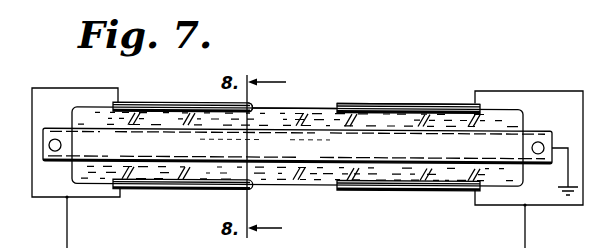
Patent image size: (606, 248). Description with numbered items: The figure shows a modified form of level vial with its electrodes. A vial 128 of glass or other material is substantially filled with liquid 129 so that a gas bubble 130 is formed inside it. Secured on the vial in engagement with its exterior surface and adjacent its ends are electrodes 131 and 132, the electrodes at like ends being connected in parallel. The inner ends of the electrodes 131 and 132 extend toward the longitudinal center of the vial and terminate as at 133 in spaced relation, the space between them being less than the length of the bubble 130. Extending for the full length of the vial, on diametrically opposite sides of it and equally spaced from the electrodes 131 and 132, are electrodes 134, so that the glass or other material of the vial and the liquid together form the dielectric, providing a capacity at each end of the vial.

The vial 128 is at (326, 104).
The liquid 129 is at (376, 105).
The gas bubble 130 is at (293, 103).
The electrode 131 is at (172, 101).
The electrode 132 is at (445, 88).
The inner end termination of electrodes 133 is at (248, 102).
The electrodes 134 is at (77, 140).